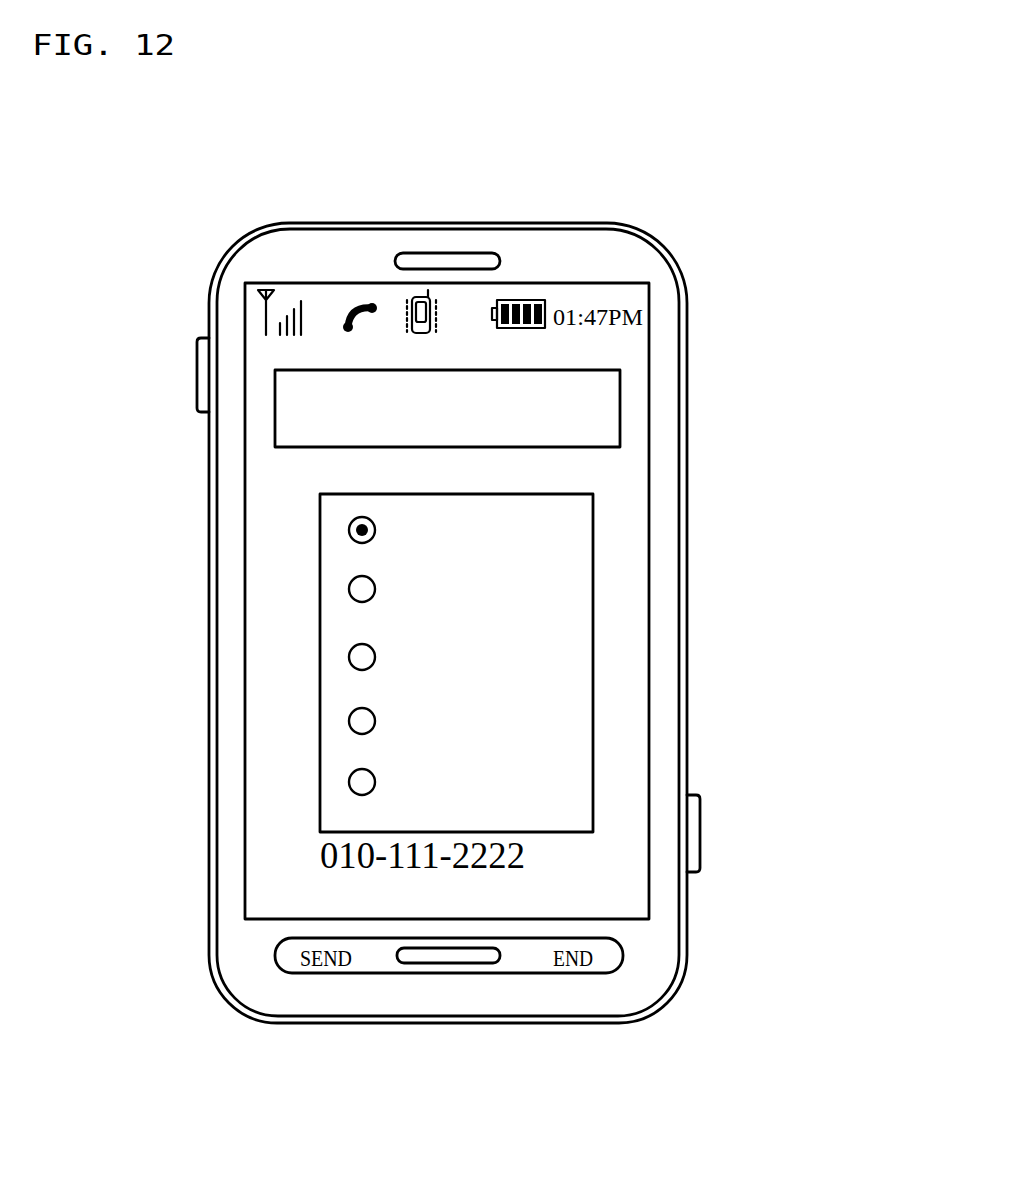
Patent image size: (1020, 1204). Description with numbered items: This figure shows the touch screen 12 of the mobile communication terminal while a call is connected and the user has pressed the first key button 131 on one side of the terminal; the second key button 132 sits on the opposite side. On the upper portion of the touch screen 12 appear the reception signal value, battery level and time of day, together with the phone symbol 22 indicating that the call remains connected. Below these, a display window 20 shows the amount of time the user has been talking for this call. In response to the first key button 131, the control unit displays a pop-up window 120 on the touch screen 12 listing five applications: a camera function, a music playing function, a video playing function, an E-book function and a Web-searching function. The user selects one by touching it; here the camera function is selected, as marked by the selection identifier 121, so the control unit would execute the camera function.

The touch screen 12 is at (649, 352).
The display window 20 is at (620, 407).
The phone symbol 22 is at (351, 302).
The pop-up window 120 is at (593, 568).
The selection identifier 121 is at (349, 530).
The first key button 131 is at (700, 832).
The second key button 132 is at (197, 375).